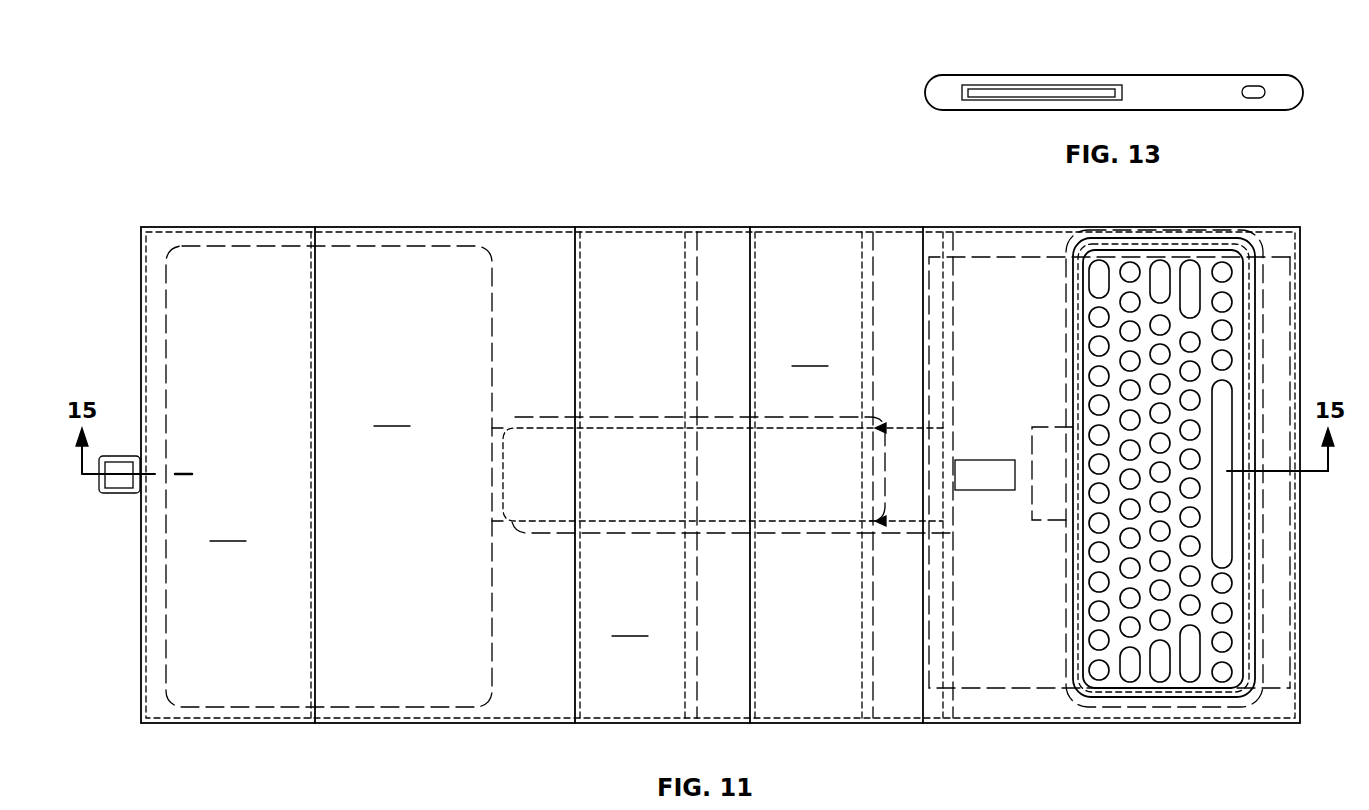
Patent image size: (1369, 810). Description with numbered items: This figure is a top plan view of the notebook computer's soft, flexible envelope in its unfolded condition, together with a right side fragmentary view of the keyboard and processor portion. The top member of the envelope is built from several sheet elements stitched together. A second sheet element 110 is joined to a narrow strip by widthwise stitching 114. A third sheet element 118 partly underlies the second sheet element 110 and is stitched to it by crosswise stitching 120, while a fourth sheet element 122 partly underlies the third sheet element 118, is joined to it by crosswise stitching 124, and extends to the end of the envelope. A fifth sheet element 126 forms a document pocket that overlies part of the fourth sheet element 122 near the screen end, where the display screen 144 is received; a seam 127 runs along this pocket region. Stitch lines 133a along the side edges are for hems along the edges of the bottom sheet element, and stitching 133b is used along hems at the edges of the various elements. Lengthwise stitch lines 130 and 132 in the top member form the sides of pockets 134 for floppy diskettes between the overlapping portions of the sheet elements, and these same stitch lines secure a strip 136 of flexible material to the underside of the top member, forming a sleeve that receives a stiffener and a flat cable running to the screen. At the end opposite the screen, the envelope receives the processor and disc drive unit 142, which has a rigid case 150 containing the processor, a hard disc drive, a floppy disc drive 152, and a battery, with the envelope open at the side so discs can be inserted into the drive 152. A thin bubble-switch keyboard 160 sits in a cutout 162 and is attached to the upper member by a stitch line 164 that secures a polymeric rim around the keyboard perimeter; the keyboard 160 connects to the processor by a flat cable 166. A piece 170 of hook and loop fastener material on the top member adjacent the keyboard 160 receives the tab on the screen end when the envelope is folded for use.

In FIG. 11, the second sheet element 110 is at (810, 355).
In FIG. 11, the widthwise stitching 114 is at (937, 237).
In FIG. 11, the third sheet element 118 is at (630, 625).
In FIG. 11, the crosswise stitching 120 is at (862, 252).
In FIG. 11, the fourth sheet element 122 is at (392, 415).
In FIG. 11, the crosswise stitching 124 is at (685, 268).
In FIG. 11, the fifth sheet element 126 is at (228, 530).
In FIG. 11, the seam 127 is at (318, 523).
In FIG. 11, the lengthwise stitch line 130 is at (616, 428).
In FIG. 11, the lengthwise stitch line 132 is at (498, 226).
In FIG. 11, the stitch lines 133a is at (1026, 228).
In FIG. 11, the stitching 133b is at (311, 298).
In FIG. 11, the pockets 134 is at (574, 312).
In FIG. 11, the strip 136 is at (802, 537).
In FIG. 11, the processor and disc drive unit 142 is at (1295, 657).
In FIG. 13, the processor and disc drive unit 142 is at (1212, 72).
In FIG. 11, the display screen 144 is at (428, 708).
In FIG. 13, the rigid case 150 is at (921, 90).
In FIG. 13, the floppy disc drive 152 is at (1032, 84).
In FIG. 11, the keyboard 160 is at (1252, 316).
In FIG. 11, the cutout 162 is at (1220, 254).
In FIG. 11, the stitch line 164 is at (1072, 368).
In FIG. 11, the flat cable 166 is at (1038, 528).
In FIG. 11, the piece of hook and loop fastener 170 is at (995, 460).